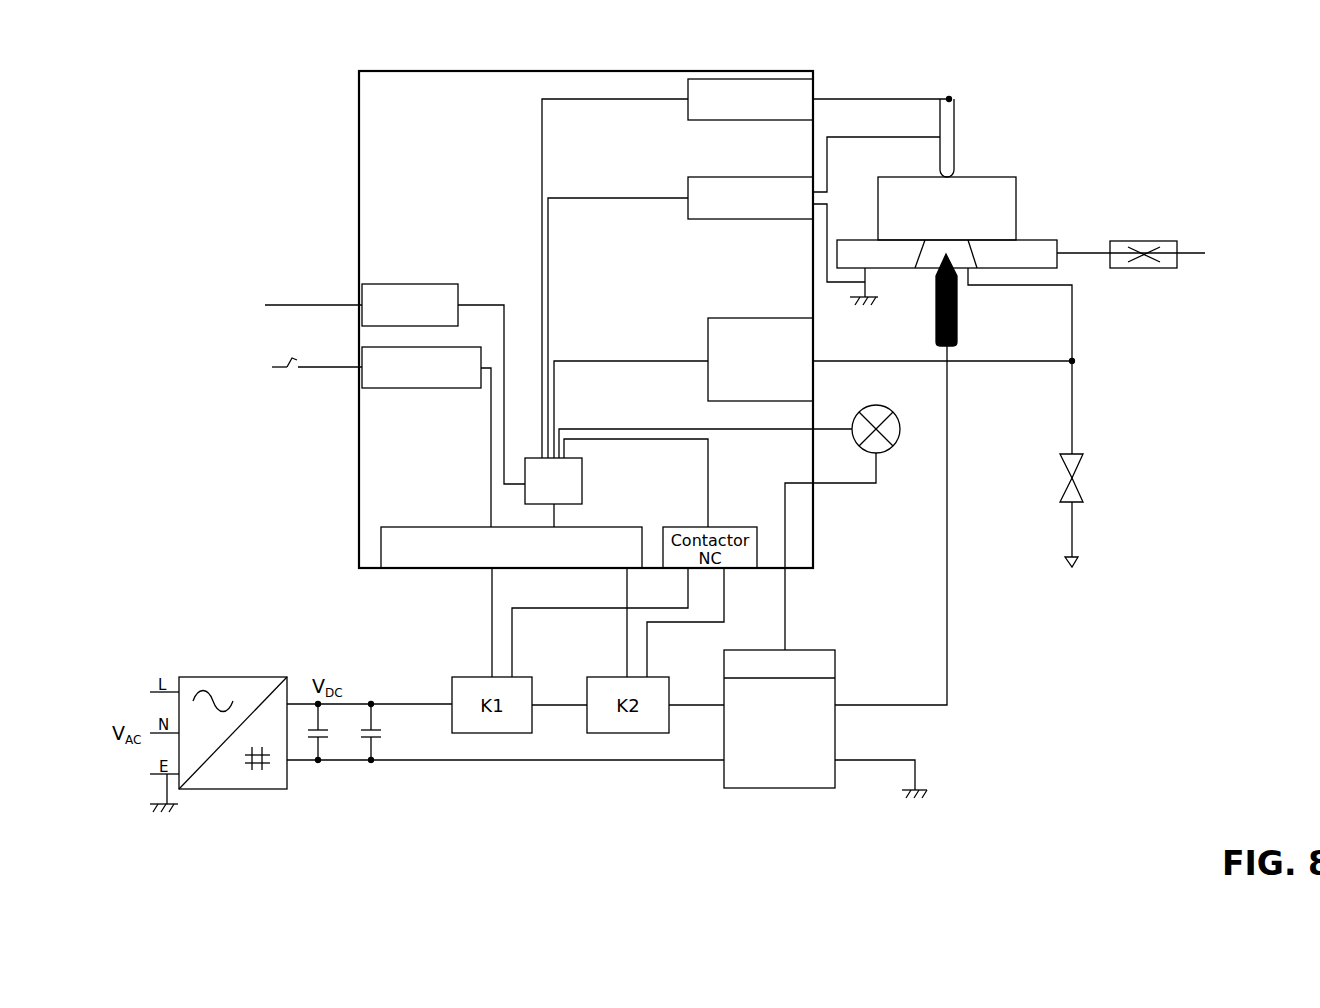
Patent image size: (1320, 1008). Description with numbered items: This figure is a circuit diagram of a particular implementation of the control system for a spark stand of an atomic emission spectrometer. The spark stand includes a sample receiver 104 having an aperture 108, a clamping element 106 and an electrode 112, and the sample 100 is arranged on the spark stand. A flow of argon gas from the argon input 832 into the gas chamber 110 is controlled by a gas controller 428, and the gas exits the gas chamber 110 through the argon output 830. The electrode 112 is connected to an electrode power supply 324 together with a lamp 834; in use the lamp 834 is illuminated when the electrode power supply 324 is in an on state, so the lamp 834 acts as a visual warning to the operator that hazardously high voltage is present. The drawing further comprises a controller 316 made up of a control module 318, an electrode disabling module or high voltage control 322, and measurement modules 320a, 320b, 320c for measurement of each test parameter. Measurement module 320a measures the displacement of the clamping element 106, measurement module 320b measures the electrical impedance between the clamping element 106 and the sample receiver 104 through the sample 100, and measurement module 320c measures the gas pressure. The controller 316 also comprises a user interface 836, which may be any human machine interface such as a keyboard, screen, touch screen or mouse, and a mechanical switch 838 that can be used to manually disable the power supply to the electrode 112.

The controller 316 is at (456, 65).
The measurement module 320a is at (677, 268).
The measurement module 320b is at (680, 317).
The measurement module 320c is at (683, 388).
The user interface 836 is at (395, 384).
The mechanical switch 838 is at (381, 437).
The control module 318 is at (688, 478).
The electrode disabling module 322 is at (511, 602).
The sample 100 is at (947, 208).
The clamping element 106 is at (957, 129).
The aperture 108 is at (978, 251).
The sample receiver 104 is at (1061, 239).
The gas chamber 110 is at (1063, 270).
The electrode 112 is at (961, 350).
The gas controller 428 is at (1181, 238).
The argon input 832 is at (1161, 255).
The argon output 830 is at (950, 478).
The lamp 834 is at (779, 666).
The electrode power supply 324 is at (825, 724).